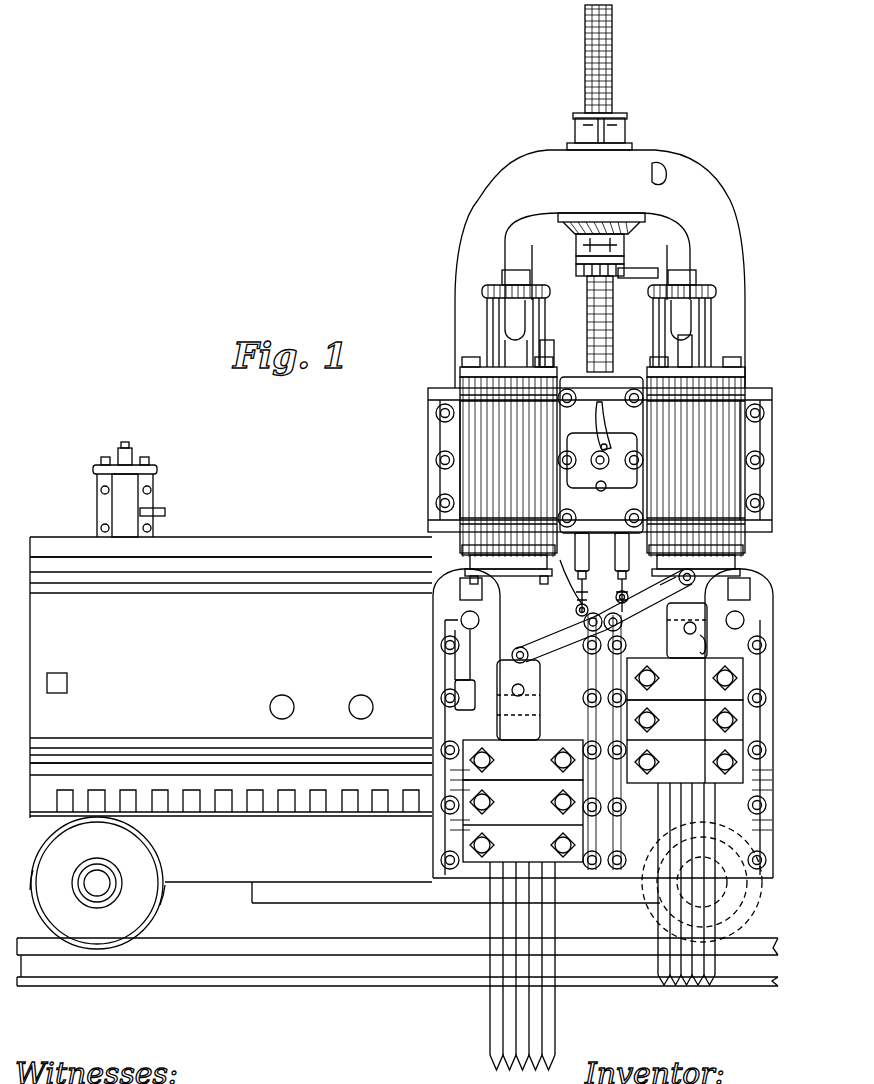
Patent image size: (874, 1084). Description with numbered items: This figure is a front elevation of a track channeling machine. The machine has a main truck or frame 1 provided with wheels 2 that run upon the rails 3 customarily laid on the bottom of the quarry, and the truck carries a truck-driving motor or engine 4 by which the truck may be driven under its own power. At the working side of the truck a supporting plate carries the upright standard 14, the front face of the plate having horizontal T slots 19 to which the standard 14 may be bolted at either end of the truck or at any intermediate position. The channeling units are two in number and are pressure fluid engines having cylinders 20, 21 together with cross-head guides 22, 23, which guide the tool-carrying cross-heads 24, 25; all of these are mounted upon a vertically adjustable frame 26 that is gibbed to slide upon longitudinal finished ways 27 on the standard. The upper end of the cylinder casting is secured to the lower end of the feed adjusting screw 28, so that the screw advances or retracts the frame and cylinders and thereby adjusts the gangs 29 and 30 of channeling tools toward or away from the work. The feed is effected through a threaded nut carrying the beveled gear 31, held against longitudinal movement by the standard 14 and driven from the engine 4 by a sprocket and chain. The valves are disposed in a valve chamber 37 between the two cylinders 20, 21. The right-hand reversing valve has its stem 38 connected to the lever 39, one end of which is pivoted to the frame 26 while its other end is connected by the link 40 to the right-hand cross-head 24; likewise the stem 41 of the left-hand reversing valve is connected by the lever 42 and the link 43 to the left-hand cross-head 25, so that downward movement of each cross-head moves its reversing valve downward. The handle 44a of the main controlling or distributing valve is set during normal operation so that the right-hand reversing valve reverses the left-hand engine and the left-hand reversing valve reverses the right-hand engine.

The main truck or frame 1 is at (345, 720).
The wheels 2 is at (135, 898).
The rails 3 is at (312, 978).
The truck-driving motor or engine 4 is at (118, 497).
The upright standard 14 is at (720, 225).
The horizontal T slots 19 is at (225, 562).
The cylinder 20 is at (745, 396).
The cylinder 21 is at (470, 415).
The cross-head guide 22 is at (627, 878).
The cross-head guide 23 is at (456, 678).
The tool-carrying cross-head 24 is at (685, 741).
The tool-carrying cross-head 25 is at (523, 821).
The vertically adjustable frame 26 is at (437, 565).
The longitudinal finished ways 27 is at (472, 302).
The feed adjusting screw 28 is at (588, 304).
The gang of channeling tools 29 is at (688, 960).
The gang of channeling tools 30 is at (530, 1005).
The beveled gear 31 is at (572, 222).
The valve chamber 37 is at (600, 455).
The stem of right-hand reversing valve 38 is at (602, 572).
The lever 39 is at (685, 679).
The link 40 is at (692, 597).
The stem of left-hand reversing valve 41 is at (590, 600).
The lever 42 is at (523, 760).
The link 43 is at (518, 677).
The handle for main controlling valve 44a is at (596, 412).